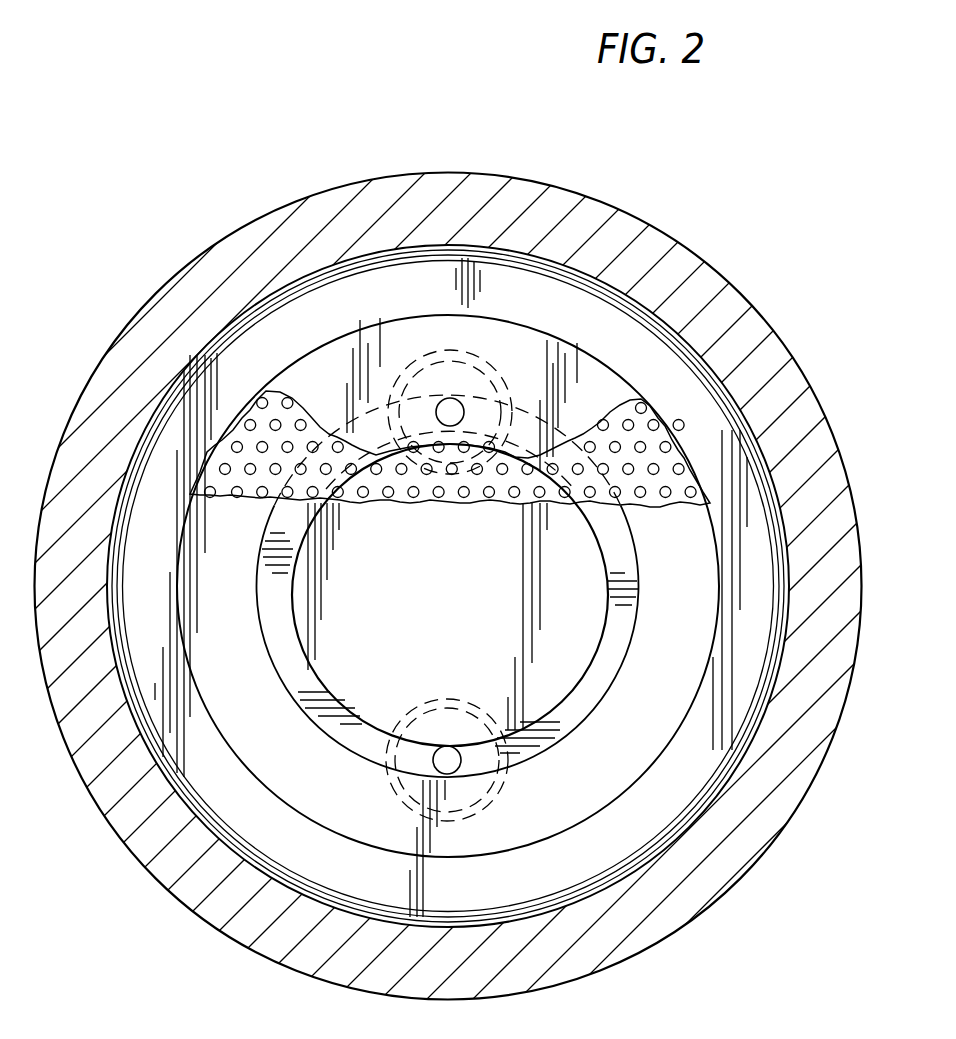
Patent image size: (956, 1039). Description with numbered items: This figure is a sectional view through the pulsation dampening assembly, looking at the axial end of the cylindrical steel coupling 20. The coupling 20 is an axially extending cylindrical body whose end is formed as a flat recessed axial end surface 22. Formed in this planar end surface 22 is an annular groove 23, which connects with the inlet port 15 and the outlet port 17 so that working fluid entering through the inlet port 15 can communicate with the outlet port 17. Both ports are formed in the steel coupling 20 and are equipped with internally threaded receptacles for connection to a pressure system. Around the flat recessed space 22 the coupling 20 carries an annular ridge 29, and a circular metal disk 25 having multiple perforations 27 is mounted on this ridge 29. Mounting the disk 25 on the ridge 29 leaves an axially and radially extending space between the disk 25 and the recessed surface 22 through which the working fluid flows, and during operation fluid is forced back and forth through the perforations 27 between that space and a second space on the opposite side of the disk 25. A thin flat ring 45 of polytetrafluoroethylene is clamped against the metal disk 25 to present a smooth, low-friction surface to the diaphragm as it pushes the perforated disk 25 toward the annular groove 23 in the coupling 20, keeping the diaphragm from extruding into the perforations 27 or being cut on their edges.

The inlet port 15 is at (458, 762).
The outlet port 17 is at (447, 403).
The cylindrical steel coupling 20 is at (833, 447).
The flat recessed axial end surface 22 is at (452, 632).
The annular groove 23 is at (620, 650).
The circular metal disk 25 is at (243, 433).
The perforations 27 is at (263, 498).
The annular ridge 29 is at (693, 398).
The thin flat ring 45 is at (323, 357).